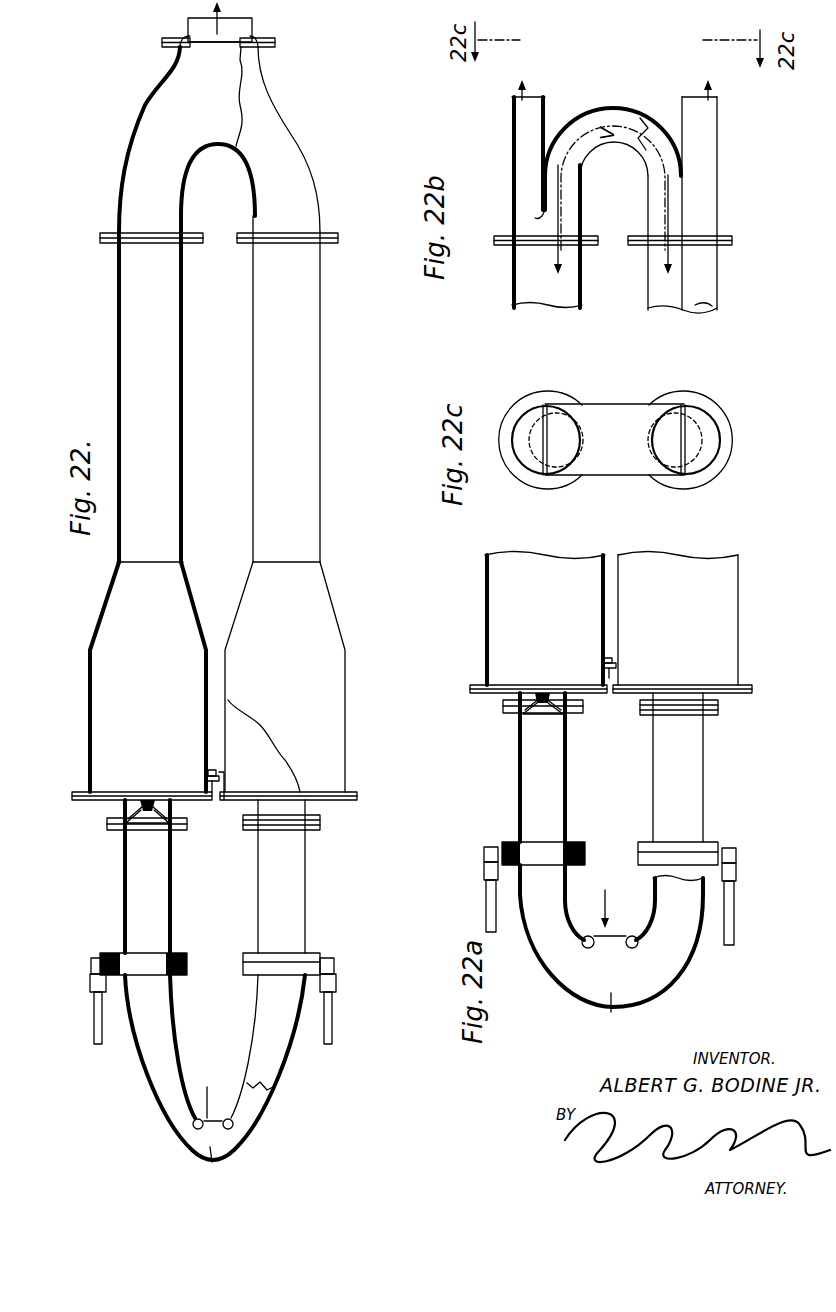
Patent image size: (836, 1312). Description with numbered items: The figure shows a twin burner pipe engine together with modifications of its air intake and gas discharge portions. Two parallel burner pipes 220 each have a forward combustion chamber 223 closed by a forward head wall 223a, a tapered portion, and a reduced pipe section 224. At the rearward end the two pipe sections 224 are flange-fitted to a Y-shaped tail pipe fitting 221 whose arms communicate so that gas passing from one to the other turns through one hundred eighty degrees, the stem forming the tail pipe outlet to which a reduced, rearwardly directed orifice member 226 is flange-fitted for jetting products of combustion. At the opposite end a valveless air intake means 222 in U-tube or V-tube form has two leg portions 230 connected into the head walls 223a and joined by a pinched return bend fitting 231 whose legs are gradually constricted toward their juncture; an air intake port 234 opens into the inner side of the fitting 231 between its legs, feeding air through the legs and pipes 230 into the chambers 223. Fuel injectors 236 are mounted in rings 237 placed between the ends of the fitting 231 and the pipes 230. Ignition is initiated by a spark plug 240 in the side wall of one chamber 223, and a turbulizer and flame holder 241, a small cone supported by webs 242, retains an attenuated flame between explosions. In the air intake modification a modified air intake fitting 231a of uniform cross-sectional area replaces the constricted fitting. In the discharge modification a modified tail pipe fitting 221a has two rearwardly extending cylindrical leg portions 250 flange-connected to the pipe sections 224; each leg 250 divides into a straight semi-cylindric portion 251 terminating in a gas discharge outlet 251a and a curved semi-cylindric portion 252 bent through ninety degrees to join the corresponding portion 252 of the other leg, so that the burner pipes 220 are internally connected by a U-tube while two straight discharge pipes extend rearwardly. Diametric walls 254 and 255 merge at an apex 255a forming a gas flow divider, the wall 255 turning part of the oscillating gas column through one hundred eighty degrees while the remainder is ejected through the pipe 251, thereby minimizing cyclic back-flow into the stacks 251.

In FIG. 22, the burner pipe 220 is at (118, 396).
In FIG. 22, the tail pipe fitting 221 is at (134, 134).
In FIG. 22B, the modified tail pipe fitting 221a is at (505, 214).
In FIG. 22, the valveless air intake means 222 is at (137, 1060).
In FIG. 22, the combustion chamber 223 is at (78, 702).
In FIG. 22A, the combustion chamber 223 is at (470, 596).
In FIG. 22, the forward head wall 223a is at (100, 803).
In FIG. 22, the reduced pipe section 224 is at (118, 343).
In FIG. 22B, the reduced pipe section 224 is at (510, 283).
In FIG. 22, the orifice member 226 is at (187, 38).
In FIG. 22, the leg portion 230 is at (126, 920).
In FIG. 22A, the leg portion 230 is at (518, 768).
In FIG. 22, the return bend fitting 231 is at (170, 1127).
In FIG. 22A, the modified air intake fitting 231a is at (532, 963).
In FIG. 22, the air intake port 234 is at (214, 1120).
In FIG. 22A, the air intake port 234 is at (618, 939).
In FIG. 22, the fuel injector 236 is at (105, 958).
In FIG. 22A, the fuel injector 236 is at (506, 851).
In FIG. 22, the ring 237 is at (122, 986).
In FIG. 22A, the ring 237 is at (512, 876).
In FIG. 22, the spark plug 240 is at (207, 779).
In FIG. 22A, the spark plug 240 is at (613, 660).
In FIG. 22, the turbulizer and flame holder 241 is at (147, 798).
In FIG. 22A, the turbulizer and flame holder 241 is at (540, 690).
In FIG. 22, the web 242 is at (163, 815).
In FIG. 22A, the web 242 is at (560, 706).
In FIG. 22B, the cylindrical leg portion 250 is at (510, 234).
In FIG. 22B, the semi-cylindric portion 251 is at (512, 157).
In FIG. 22C, the semi-cylindric portion 251 is at (522, 416).
In FIG. 22B, the gas discharge outlet 251a is at (546, 110).
In FIG. 22C, the gas discharge outlet 251a is at (530, 457).
In FIG. 22B, the curved semi-cylindric portion 252 is at (574, 120).
In FIG. 22C, the curved semi-cylindric portion 252 is at (552, 423).
In FIG. 22B, the diametric wall 254 is at (541, 149).
In FIG. 22C, the diametric wall 254 is at (534, 430).
In FIG. 22B, the diametric wall 255 is at (560, 140).
In FIG. 22C, the diametric wall 255 is at (560, 464).
In FIG. 22B, the apex 255a is at (531, 191).